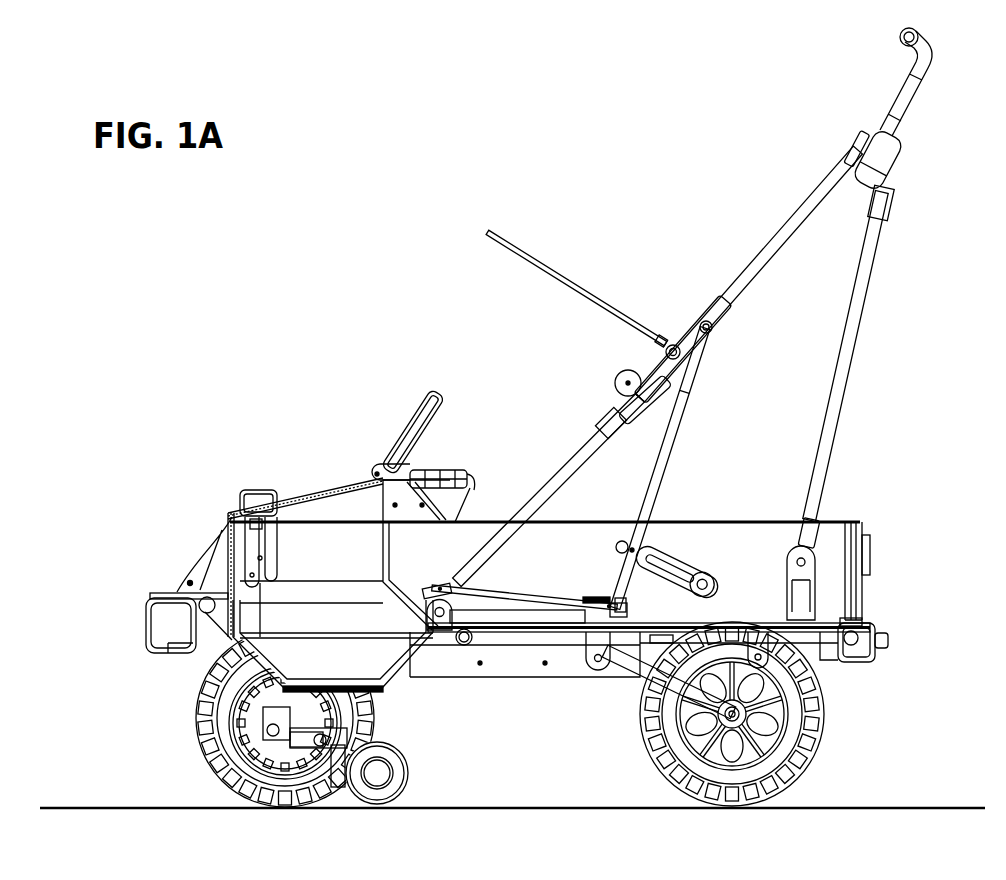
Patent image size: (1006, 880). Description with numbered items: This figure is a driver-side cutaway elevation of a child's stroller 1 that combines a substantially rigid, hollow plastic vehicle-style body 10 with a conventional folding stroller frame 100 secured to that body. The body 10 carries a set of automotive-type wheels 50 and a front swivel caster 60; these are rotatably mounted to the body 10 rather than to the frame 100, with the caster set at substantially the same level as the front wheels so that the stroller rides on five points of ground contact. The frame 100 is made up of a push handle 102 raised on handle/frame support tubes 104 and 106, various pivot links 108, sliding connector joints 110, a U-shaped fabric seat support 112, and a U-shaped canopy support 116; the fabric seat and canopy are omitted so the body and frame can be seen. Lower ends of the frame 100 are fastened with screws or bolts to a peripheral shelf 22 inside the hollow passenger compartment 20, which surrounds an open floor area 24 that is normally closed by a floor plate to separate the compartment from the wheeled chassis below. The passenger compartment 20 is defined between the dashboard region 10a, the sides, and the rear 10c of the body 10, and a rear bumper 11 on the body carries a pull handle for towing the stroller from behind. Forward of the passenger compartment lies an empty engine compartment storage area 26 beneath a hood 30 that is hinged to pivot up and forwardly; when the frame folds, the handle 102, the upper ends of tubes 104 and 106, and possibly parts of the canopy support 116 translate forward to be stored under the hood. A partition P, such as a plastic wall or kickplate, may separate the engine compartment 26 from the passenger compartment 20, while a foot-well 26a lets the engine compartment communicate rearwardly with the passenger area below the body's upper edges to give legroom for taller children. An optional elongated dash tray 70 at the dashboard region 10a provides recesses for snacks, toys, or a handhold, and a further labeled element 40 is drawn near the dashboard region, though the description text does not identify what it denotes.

The child's stroller 1 is at (372, 210).
The vehicle-style body 10 is at (555, 545).
The dashboard region 10a is at (400, 497).
The rear 10c is at (863, 600).
The rear bumper 11 is at (858, 628).
The passenger compartment 20 is at (690, 542).
The peripheral shelf 22 is at (765, 622).
The floor area 24 is at (537, 628).
The engine compartment storage area 26 is at (325, 558).
The foot-well 26a is at (340, 682).
The hood 30 is at (347, 478).
The seat back 40 is at (402, 420).
The automotive-type wheels 50 is at (215, 702).
The swivel caster 60 is at (395, 770).
The dash tray 70 is at (440, 470).
The folding stroller frame 100 is at (708, 324).
The push handle 102 is at (925, 50).
The handle/frame support tube 104 is at (808, 202).
The handle/frame support tube 106 is at (880, 230).
The pivot link 108 is at (617, 377).
The sliding connector joint 110 is at (890, 160).
The U-shaped fabric seat support 112 is at (683, 402).
The U-shaped canopy support 116 is at (578, 290).
The partition P is at (388, 550).